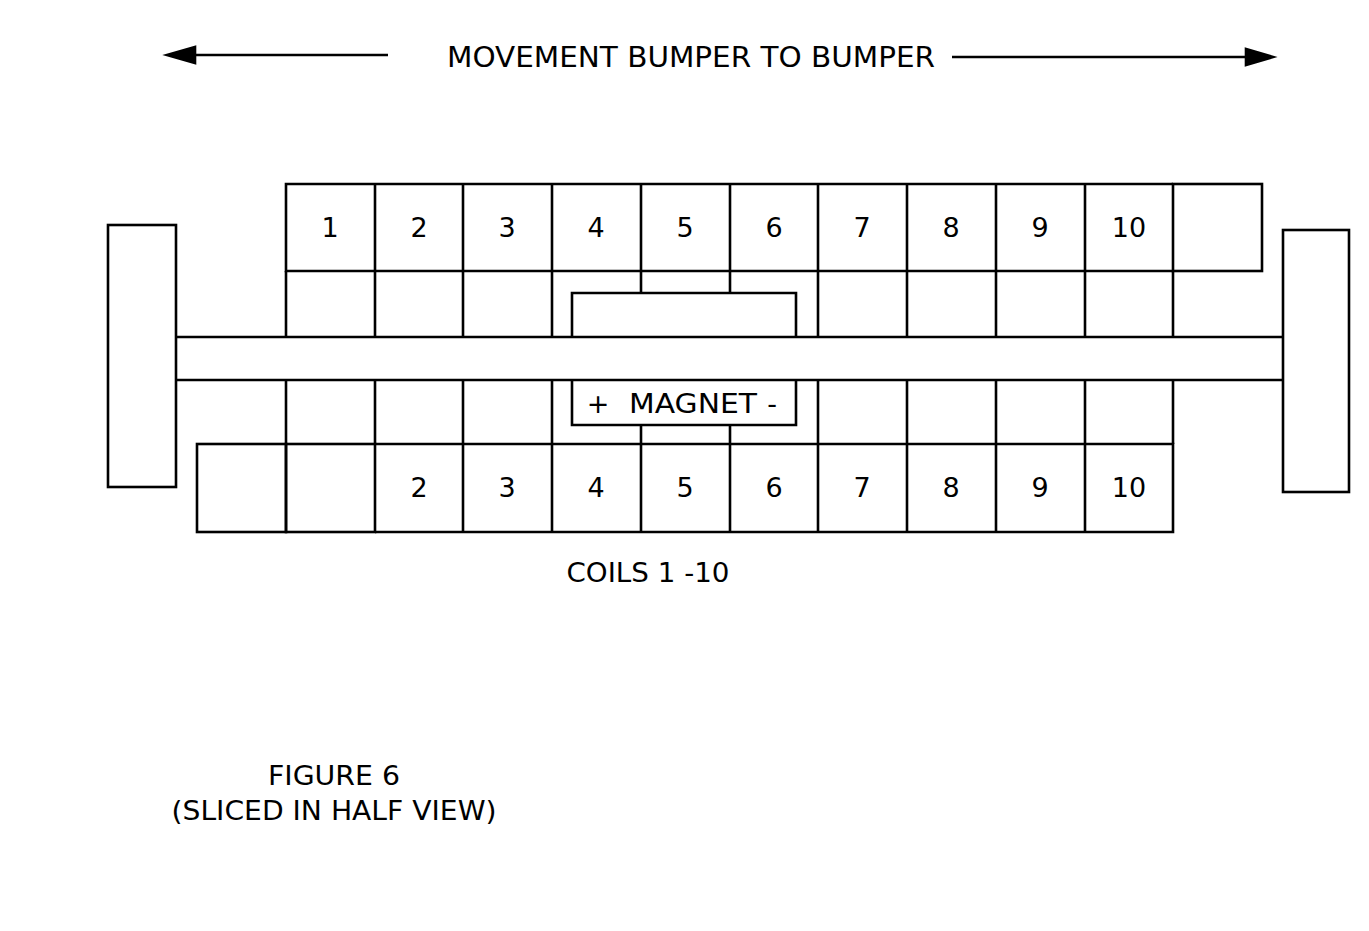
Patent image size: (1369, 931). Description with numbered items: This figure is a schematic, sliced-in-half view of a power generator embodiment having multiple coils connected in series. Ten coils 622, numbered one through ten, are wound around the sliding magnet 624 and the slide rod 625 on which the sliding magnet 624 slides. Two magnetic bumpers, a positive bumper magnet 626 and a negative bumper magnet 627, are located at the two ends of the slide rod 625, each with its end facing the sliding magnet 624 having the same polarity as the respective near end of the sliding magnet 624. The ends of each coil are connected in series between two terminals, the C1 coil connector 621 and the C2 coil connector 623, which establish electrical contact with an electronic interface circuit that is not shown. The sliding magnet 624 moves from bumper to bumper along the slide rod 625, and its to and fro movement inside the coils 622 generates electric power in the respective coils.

The C1 coil connector 1 621 is at (242, 532).
The coils 622 is at (328, 532).
The C2 coil connector 2 623 is at (1198, 185).
The sliding magnet 624 is at (683, 293).
The slide rod 625 is at (1193, 385).
The positive bumper magnet 626 is at (128, 487).
The negative bumper magnet 627 is at (1328, 493).